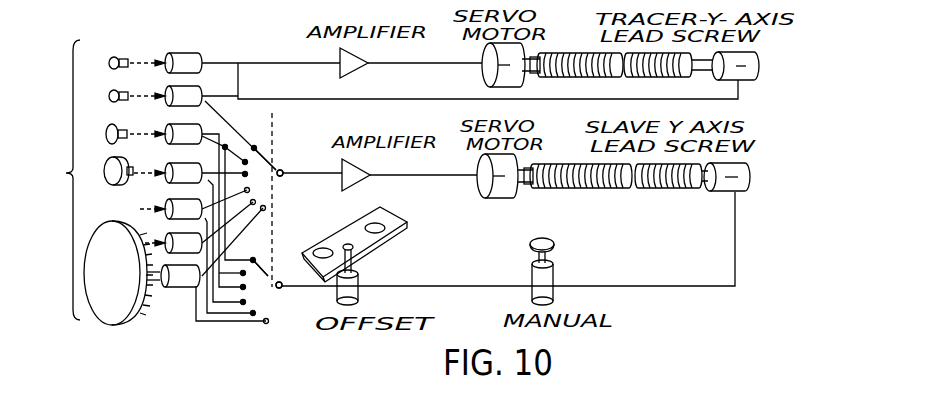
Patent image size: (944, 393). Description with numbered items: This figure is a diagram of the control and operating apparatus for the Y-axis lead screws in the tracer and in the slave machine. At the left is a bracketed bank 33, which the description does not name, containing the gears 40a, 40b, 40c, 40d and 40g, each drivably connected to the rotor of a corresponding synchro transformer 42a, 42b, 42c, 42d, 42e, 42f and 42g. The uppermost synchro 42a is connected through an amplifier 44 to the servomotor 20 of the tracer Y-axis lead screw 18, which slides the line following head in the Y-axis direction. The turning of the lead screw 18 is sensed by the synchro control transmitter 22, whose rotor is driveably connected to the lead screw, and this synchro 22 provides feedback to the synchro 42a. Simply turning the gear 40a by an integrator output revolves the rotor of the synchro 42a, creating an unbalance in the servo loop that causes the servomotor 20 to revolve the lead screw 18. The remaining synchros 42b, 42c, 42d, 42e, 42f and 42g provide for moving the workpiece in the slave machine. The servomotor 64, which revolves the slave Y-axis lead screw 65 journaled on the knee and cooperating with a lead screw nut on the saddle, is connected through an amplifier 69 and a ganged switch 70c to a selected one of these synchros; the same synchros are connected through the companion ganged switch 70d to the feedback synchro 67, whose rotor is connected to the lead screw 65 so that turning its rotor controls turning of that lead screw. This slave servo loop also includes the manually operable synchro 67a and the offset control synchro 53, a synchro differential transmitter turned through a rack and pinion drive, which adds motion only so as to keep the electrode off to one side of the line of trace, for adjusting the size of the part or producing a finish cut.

The resolver bank 33 is at (124, 35).
The gear 40a is at (112, 61).
The gear 40b is at (111, 93).
The gear 40c is at (108, 128).
The gear 40d is at (108, 184).
The gear 40g is at (116, 330).
The synchro transformer 42a is at (190, 62).
The synchro transformer 42b is at (201, 92).
The synchro transformer 42c is at (178, 125).
The synchro transformer 42d is at (178, 164).
The synchro transformer 42e is at (176, 200).
The synchro transformer 42f is at (178, 234).
The synchro transformer 42g is at (176, 288).
The amplifier 44 is at (356, 70).
The servomotor 20 is at (483, 79).
The Y-axis lead screw 18 is at (645, 78).
The synchro control transmitter 22 is at (760, 68).
The ganged switch 70c is at (281, 168).
The ganged switch 70d is at (268, 282).
The amplifier 69 is at (356, 162).
The servomotor 64 is at (505, 198).
The Y-axis lead screw 65 is at (617, 190).
The synchro 67 is at (750, 190).
The synchro differential transmitter 53 is at (357, 283).
The manually operable synchro 67a is at (558, 279).